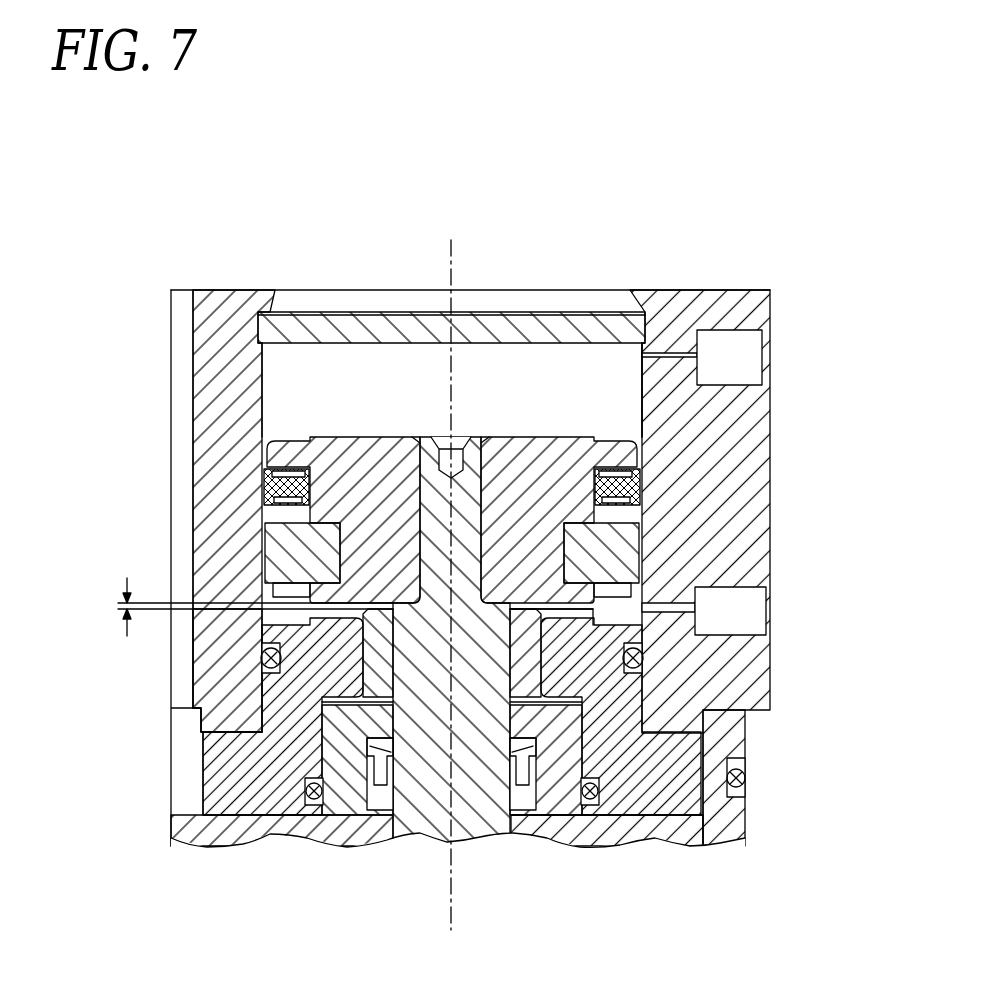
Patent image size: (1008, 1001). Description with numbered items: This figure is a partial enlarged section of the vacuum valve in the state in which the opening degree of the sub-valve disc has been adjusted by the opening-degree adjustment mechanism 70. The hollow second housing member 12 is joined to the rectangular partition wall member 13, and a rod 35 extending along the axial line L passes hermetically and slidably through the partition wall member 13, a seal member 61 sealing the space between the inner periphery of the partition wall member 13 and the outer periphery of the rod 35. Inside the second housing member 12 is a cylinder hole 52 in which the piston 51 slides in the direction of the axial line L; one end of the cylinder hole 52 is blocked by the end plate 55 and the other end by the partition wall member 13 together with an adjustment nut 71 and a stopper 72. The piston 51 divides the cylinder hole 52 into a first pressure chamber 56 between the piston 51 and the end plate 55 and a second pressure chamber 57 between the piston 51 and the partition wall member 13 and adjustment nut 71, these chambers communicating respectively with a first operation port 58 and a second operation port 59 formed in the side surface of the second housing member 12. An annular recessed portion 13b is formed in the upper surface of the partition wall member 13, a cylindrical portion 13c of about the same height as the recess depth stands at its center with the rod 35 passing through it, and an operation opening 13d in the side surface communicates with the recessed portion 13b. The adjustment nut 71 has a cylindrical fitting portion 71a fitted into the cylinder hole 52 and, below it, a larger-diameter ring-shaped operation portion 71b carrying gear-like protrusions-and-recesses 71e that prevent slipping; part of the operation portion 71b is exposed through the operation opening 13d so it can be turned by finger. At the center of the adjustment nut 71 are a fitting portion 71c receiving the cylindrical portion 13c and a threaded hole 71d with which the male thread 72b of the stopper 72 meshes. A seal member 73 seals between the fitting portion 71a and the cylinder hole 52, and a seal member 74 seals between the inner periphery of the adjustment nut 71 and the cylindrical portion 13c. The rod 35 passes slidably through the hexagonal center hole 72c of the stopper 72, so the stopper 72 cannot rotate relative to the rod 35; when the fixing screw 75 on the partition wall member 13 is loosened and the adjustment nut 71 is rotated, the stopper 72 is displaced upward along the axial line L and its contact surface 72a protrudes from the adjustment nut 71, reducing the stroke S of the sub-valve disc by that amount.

The second housing member 12 is at (222, 407).
The partition wall member 13 is at (610, 800).
The recessed portion 13b is at (683, 805).
The cylindrical portion 13c is at (553, 780).
The operation opening 13d is at (178, 826).
The rod 35 is at (420, 830).
The piston 51 is at (337, 455).
The cylinder hole 52 is at (637, 383).
The end plate 55 is at (513, 323).
The first pressure chamber 56 is at (380, 365).
The second pressure chamber 57 is at (608, 613).
The first operation port 58 is at (733, 352).
The second operation port 59 is at (740, 602).
The seal member 61 is at (383, 792).
The opening-degree adjustment mechanism 70 is at (222, 652).
The adjustment nut 71 is at (268, 816).
The fitting portion 71a is at (300, 680).
The operation portion 71b is at (228, 782).
The fitting portion 71c is at (338, 820).
The threaded hole 71d is at (505, 705).
The protrusions-and-recesses 71e is at (187, 808).
The stopper 72 is at (377, 652).
The contact surface 72a is at (385, 603).
The male thread 72b is at (585, 632).
The center hole 72c is at (560, 565).
The seal member 73 is at (634, 660).
The seal member 74 is at (316, 806).
The fixing screw 75 is at (745, 780).
The stroke S is at (344, 607).
The axial line L is at (453, 567).